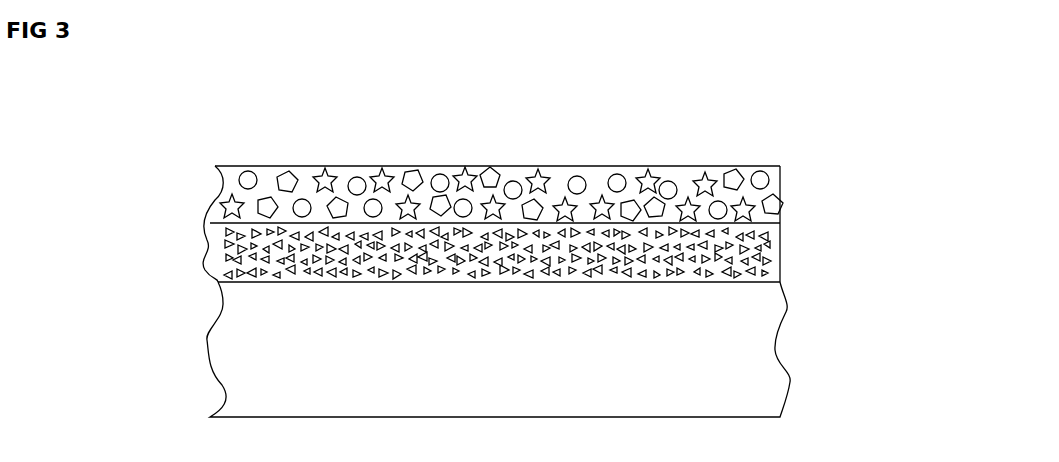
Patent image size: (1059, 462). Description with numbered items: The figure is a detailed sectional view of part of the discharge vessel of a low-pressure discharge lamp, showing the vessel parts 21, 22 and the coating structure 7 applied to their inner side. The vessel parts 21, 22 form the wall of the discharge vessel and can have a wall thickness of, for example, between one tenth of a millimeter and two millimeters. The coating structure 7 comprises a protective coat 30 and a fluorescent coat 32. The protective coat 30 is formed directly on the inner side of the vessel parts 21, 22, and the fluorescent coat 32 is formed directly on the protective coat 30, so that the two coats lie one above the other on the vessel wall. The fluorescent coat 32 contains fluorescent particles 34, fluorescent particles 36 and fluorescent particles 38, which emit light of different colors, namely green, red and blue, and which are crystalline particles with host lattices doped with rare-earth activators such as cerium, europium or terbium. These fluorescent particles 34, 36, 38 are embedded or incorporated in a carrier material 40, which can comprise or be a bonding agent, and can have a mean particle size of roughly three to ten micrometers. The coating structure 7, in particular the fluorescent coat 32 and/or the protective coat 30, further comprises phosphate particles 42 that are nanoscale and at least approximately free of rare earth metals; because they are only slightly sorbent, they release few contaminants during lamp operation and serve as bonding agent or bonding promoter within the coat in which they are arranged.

The coating structure 7 is at (200, 166).
The vessel part 21 is at (558, 349).
The vessel part 22 is at (787, 317).
The protective coat 30 is at (788, 265).
The fluorescent coat 32 is at (526, 185).
The fluorescent particles 34 is at (244, 167).
The fluorescent particles 36 is at (284, 167).
The fluorescent particles 38 is at (378, 167).
The carrier material 40 is at (215, 167).
The phosphate particles 42 is at (777, 240).